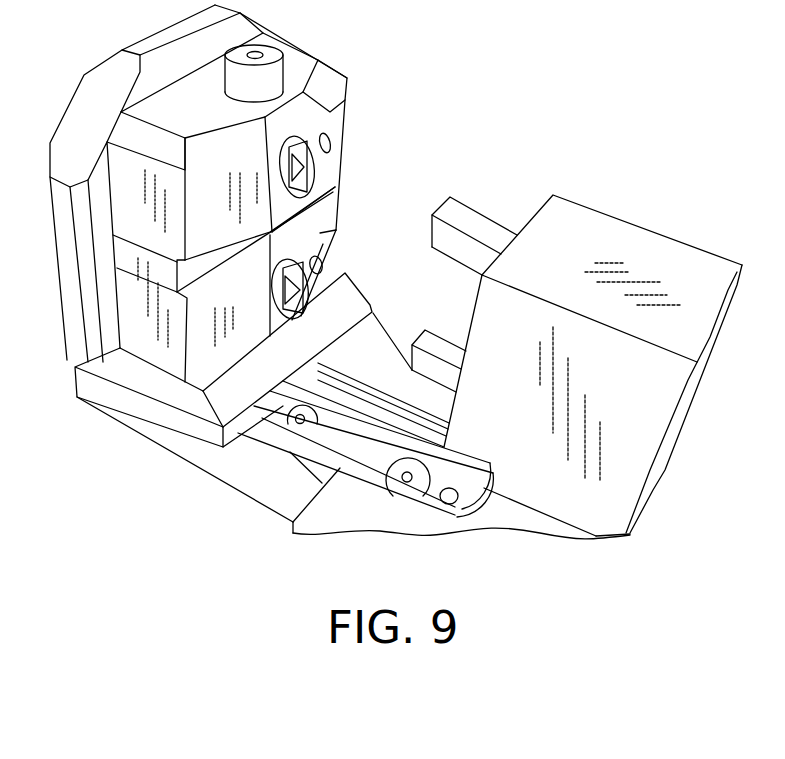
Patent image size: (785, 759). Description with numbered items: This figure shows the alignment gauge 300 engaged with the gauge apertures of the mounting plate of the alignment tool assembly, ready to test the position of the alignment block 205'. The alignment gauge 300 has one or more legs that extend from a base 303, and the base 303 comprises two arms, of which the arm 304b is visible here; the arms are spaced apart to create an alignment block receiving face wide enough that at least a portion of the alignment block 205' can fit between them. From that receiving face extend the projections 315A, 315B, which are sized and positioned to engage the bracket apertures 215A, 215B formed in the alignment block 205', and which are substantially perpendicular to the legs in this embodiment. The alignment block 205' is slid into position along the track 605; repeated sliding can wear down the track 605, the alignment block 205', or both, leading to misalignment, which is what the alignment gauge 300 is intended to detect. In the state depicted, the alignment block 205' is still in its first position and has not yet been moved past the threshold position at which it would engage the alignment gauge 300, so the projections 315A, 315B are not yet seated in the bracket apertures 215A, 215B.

The alignment block 205' is at (189, 226).
The bracket aperture 215A is at (305, 162).
The bracket aperture 215B is at (296, 282).
The alignment gauge 300 is at (687, 250).
The base 303 is at (543, 526).
The arm 304b is at (350, 520).
The projection 315A is at (472, 215).
The projection 315B is at (432, 338).
The track 605 is at (367, 407).